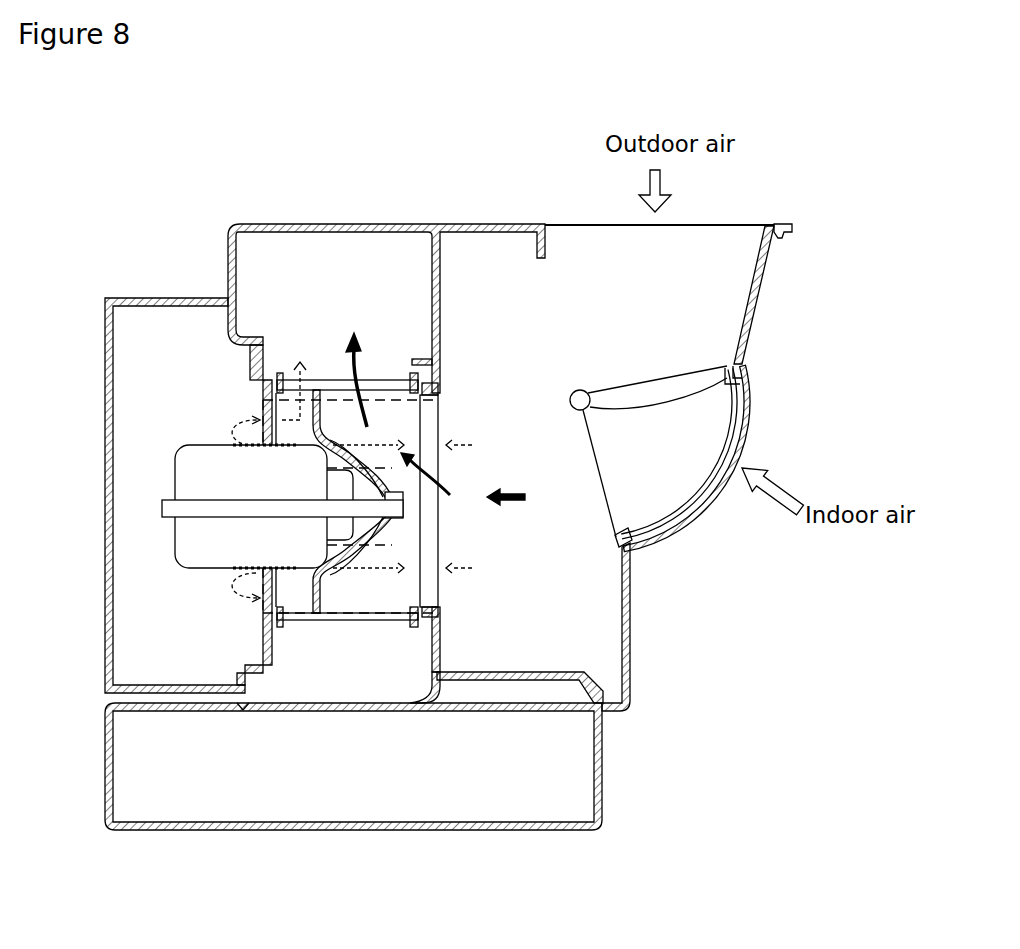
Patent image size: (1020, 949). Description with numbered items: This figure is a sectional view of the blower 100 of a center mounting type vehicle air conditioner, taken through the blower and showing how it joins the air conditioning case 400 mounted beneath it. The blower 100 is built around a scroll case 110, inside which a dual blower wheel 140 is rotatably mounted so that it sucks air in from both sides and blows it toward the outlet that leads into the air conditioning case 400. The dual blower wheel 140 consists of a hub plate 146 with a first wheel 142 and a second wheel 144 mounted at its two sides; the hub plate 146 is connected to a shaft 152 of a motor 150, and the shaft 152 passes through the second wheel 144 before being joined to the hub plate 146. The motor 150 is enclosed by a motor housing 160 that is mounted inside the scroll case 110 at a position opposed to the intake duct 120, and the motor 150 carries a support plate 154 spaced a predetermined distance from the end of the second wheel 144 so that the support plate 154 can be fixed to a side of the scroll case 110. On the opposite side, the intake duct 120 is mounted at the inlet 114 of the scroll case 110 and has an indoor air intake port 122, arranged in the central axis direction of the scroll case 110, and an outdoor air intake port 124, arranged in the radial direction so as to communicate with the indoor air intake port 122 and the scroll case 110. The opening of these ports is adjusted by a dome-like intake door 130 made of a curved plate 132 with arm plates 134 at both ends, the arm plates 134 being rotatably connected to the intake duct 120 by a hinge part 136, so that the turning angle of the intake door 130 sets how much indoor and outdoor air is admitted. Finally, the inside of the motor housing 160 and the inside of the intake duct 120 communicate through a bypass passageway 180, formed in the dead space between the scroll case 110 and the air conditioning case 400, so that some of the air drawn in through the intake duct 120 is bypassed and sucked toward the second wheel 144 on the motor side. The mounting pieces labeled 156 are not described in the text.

The blower 100 is at (456, 524).
The scroll case 110 is at (330, 224).
The inlet of the scroll case 114 is at (437, 613).
The intake duct 120 is at (768, 281).
The indoor air intake port 122 is at (688, 518).
The outdoor air intake port 124 is at (693, 222).
The intake door 130 is at (733, 431).
The curved plate 132 is at (647, 545).
The arm plate 134 is at (640, 373).
The hinge part 136 is at (727, 376).
The dual blower wheel 140 is at (374, 643).
The first wheel 142 is at (355, 622).
The second wheel 144 is at (288, 628).
The hub plate 146 is at (337, 628).
The motor 150 is at (169, 548).
The shaft 152 is at (163, 505).
The support plate 154 is at (253, 358).
The motor bracket 156 is at (262, 415).
The motor housing 160 is at (105, 340).
The bypass passageway 180 is at (438, 427).
The air conditioning case 400 is at (501, 833).